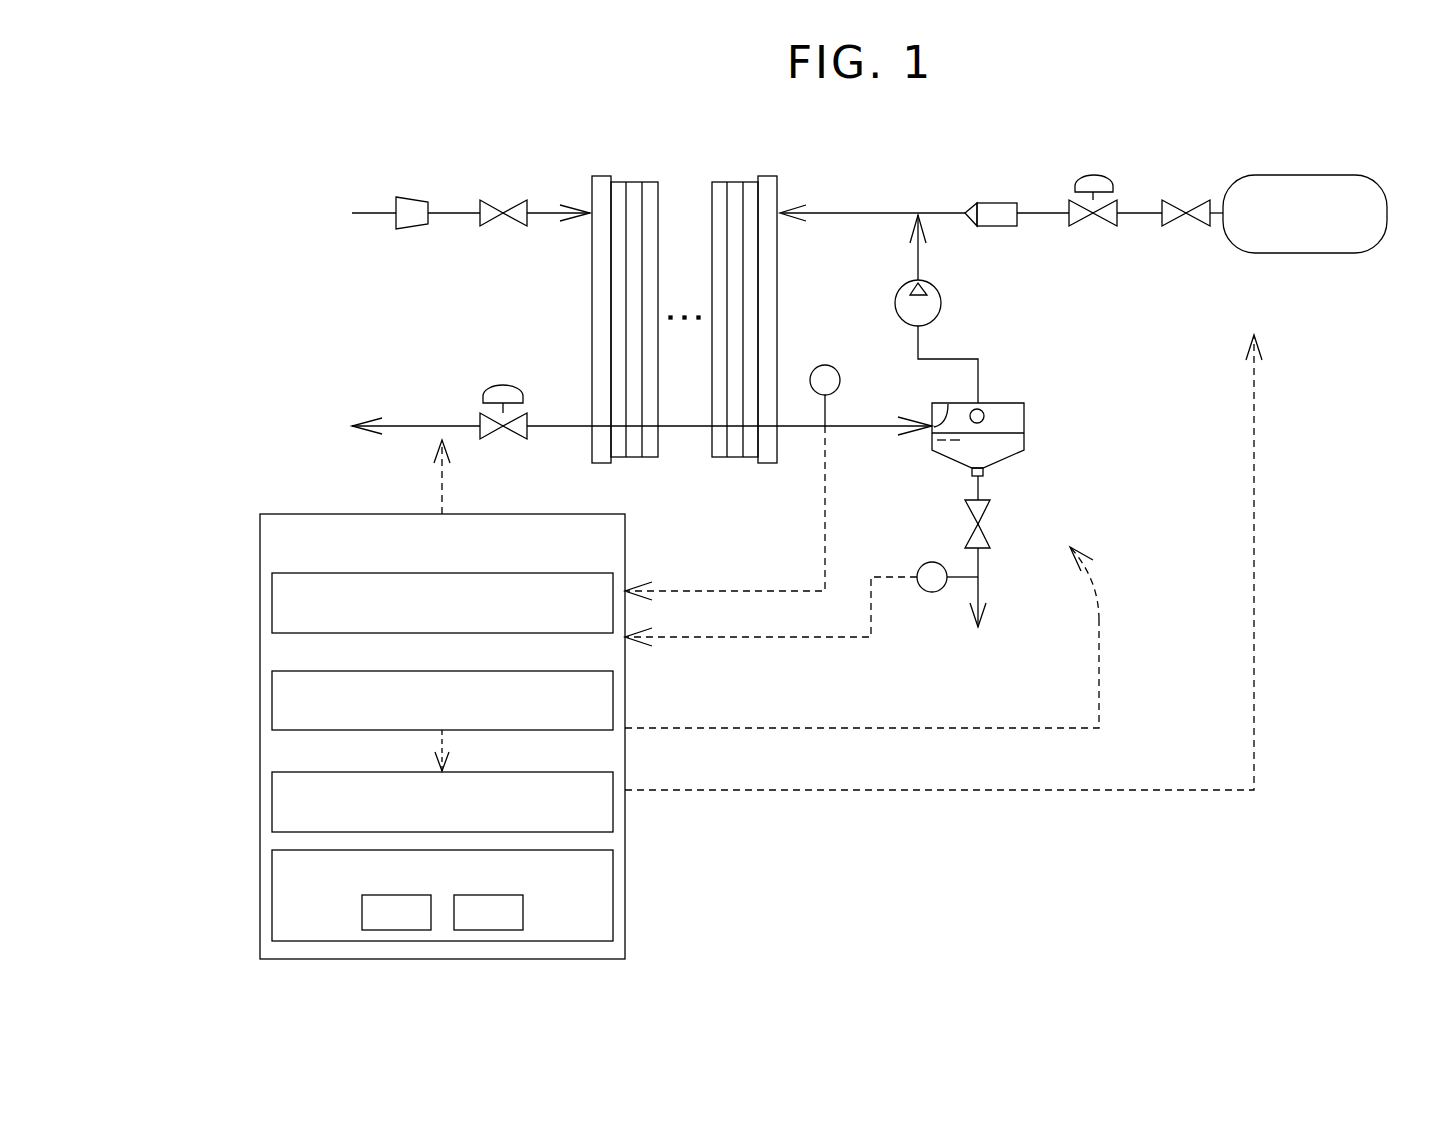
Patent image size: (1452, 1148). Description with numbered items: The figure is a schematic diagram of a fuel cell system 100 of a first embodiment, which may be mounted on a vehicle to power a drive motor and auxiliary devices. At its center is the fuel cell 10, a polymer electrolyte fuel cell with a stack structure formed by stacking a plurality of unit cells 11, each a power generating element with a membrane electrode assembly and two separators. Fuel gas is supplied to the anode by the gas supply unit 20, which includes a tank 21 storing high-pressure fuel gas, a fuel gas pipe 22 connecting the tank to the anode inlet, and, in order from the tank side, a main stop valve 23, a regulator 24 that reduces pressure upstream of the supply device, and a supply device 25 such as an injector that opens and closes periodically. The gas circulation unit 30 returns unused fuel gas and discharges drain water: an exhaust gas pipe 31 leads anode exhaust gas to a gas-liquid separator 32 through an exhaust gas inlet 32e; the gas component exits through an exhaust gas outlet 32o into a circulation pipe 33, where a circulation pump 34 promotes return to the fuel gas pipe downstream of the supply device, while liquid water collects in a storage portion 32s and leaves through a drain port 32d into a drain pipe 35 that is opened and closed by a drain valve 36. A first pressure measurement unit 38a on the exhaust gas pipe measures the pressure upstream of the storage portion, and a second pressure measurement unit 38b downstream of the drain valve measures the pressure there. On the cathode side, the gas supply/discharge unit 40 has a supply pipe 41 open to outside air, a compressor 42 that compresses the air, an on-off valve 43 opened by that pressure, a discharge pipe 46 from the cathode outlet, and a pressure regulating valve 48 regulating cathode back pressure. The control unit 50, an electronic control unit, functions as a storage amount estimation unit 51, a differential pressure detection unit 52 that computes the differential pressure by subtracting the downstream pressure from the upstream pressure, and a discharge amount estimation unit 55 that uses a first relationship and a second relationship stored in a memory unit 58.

The fuel cell system 100 is at (296, 105).
The fuel cell 10 is at (676, 112).
The unit cell 11 is at (635, 176).
The gas supply unit 20 is at (1142, 268).
The tank 21 is at (1290, 175).
The fuel gas pipe 22 is at (871, 213).
The main stop valve 23 is at (1172, 200).
The regulator 24 is at (1090, 175).
The supply device 25 is at (992, 203).
The gas circulation unit 30 is at (1087, 504).
The exhaust gas pipe 31 is at (883, 428).
The gas-liquid separator 32 is at (1005, 403).
The exhaust gas inlet 32e is at (947, 405).
The exhaust gas outlet 32o is at (985, 416).
The storage portion 32s is at (1008, 450).
The drain port 32d is at (980, 470).
The circulation pipe 33 is at (948, 359).
The circulation pump 34 is at (937, 288).
The drain pipe 35 is at (983, 594).
The drain valve 36 is at (985, 527).
The first pressure measurement unit 38a is at (826, 365).
The second pressure measurement unit 38b is at (931, 562).
The gas supply/discharge unit 40 is at (339, 189).
The supply pipe 41 is at (383, 213).
The compressor 42 is at (420, 229).
The on-off valve 43 is at (493, 226).
The discharge pipe 46 is at (440, 426).
The pressure regulating valve 48 is at (497, 387).
The control unit 50 is at (305, 514).
The storage amount estimation unit 51 is at (545, 573).
The differential pressure detection unit 52 is at (545, 671).
The discharge amount estimation unit 55 is at (545, 772).
The memory unit 58 is at (613, 890).